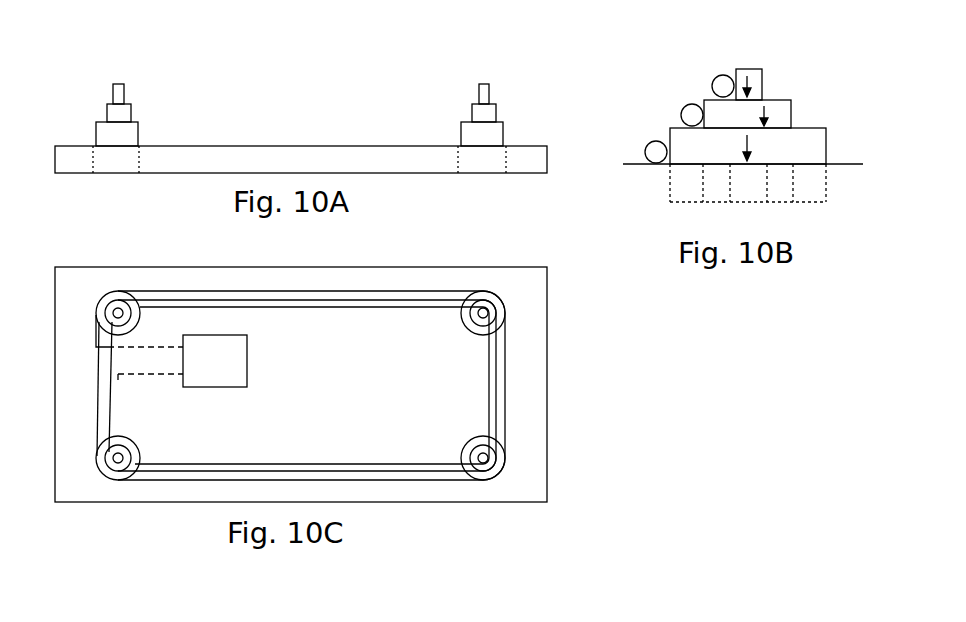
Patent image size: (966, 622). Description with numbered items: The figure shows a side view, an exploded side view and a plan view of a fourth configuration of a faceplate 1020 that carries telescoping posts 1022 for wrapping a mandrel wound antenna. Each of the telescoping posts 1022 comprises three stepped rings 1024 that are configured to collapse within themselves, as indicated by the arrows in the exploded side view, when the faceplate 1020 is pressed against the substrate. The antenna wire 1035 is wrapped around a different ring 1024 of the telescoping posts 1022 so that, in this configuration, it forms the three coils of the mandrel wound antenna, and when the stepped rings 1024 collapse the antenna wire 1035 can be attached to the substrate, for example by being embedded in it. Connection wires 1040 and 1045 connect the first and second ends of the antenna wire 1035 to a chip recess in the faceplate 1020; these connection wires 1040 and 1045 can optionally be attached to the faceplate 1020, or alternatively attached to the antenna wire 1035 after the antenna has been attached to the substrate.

In FIG. 10A, the faceplate 1020 is at (472, 173).
In FIG. 10C, the faceplate 1020 is at (548, 402).
In FIG. 10A, the telescoping posts 1022 is at (318, 73).
In FIG. 10B, the telescoping posts 1022 is at (751, 82).
In FIG. 10C, the telescoping posts 1022 is at (117, 282).
In FIG. 10A, the stepped rings 1024 is at (123, 88).
In FIG. 10B, the stepped rings 1024 is at (748, 69).
In FIG. 10B, the antenna wire 1035 is at (682, 108).
In FIG. 10C, the antenna wire 1035 is at (507, 370).
In FIG. 10C, the connection wire 1040 is at (157, 375).
In FIG. 10C, the connection wire 1045 is at (157, 347).